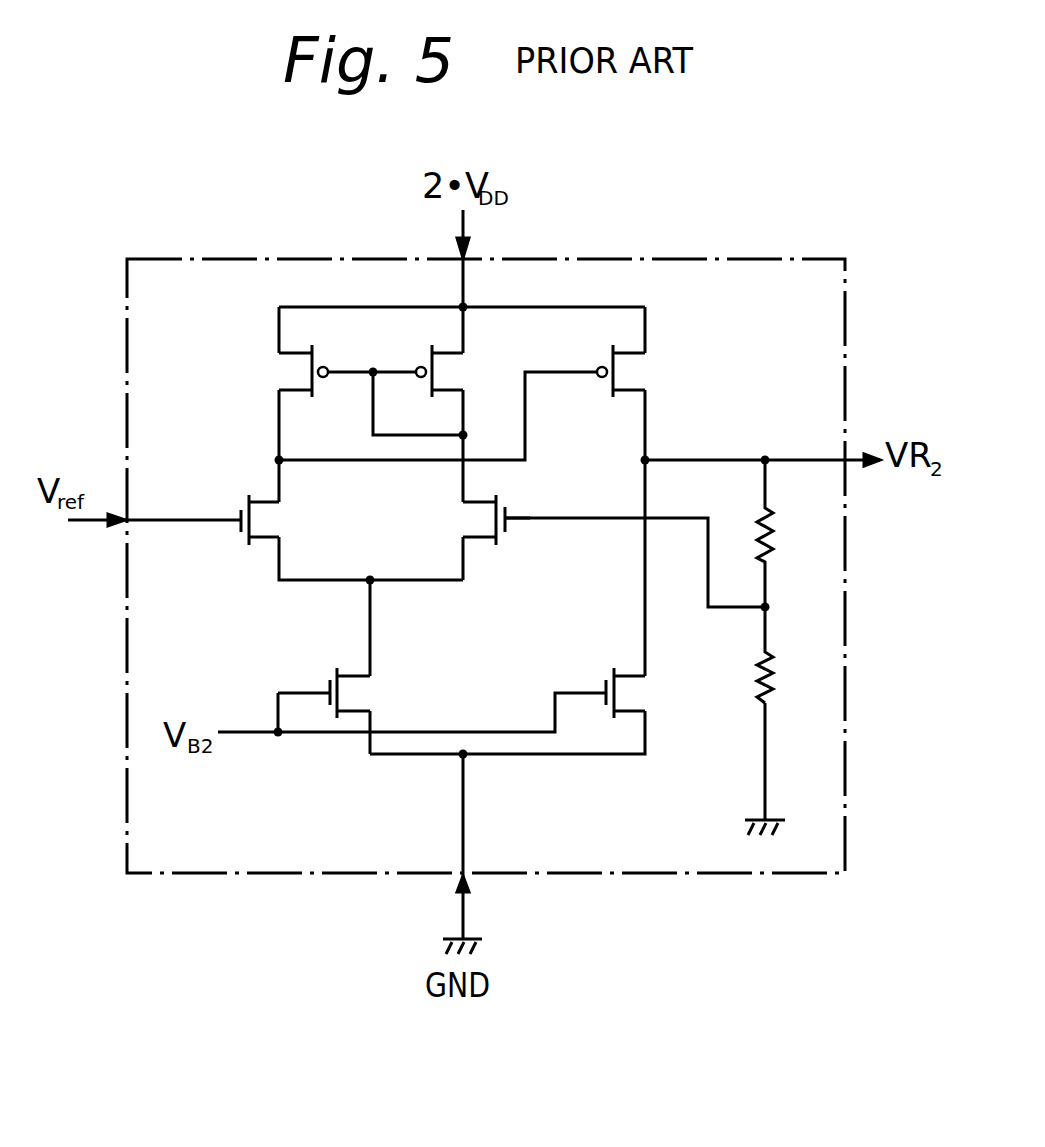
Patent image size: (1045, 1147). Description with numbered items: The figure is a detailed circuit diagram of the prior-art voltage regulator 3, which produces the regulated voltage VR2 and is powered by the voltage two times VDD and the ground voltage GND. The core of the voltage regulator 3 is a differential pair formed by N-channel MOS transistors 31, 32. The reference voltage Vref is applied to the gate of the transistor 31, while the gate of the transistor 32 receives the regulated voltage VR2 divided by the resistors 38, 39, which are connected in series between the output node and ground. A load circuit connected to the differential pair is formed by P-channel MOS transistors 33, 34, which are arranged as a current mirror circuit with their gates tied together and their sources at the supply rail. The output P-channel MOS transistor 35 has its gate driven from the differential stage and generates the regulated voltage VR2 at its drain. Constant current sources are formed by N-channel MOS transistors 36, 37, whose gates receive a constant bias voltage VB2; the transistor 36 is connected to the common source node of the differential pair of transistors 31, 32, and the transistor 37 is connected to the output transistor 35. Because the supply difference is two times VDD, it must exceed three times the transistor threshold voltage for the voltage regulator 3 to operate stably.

The voltage regulator 3 is at (682, 258).
The N-channel MOS transistor 31 is at (237, 512).
The N-channel MOS transistor 32 is at (472, 523).
The P-channel MOS transistor 33 is at (288, 373).
The P-channel MOS transistor 34 is at (457, 372).
The output P-channel MOS transistor 35 is at (648, 371).
The N-channel MOS transistor 36 is at (320, 685).
The N-channel MOS transistor 37 is at (600, 685).
The resistor 38 is at (778, 532).
The resistor 39 is at (777, 687).